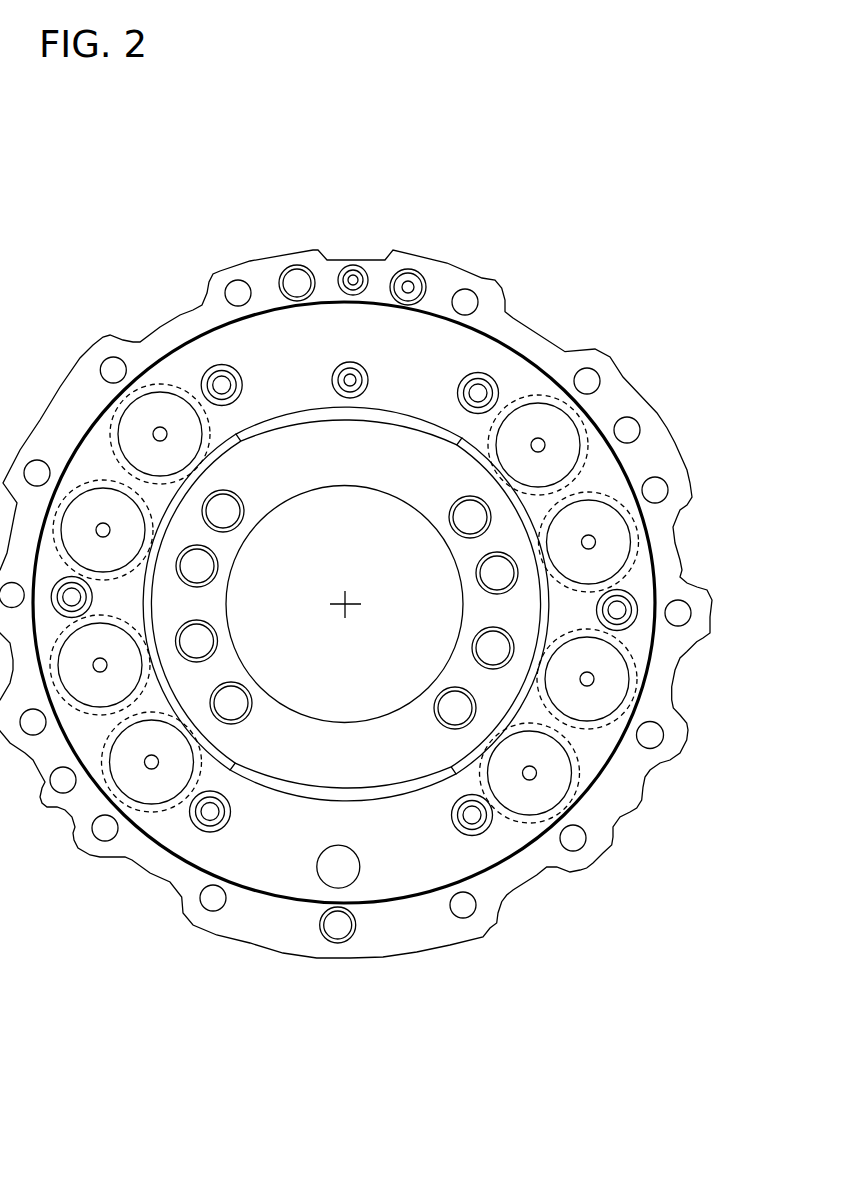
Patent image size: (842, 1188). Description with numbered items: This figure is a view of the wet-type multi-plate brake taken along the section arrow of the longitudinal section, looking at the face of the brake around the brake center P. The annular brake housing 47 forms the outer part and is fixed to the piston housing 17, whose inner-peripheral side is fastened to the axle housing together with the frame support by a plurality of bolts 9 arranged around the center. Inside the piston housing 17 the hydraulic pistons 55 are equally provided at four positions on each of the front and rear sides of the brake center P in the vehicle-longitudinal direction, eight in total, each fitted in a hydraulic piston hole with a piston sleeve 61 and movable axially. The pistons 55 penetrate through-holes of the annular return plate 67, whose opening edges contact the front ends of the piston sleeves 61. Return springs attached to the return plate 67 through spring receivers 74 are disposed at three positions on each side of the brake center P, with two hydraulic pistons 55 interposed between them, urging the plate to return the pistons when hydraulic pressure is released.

The brake housing 47 is at (262, 272).
The piston housing 17 is at (402, 467).
The hydraulic piston 55 is at (542, 401).
The piston sleeve 61 is at (597, 463).
The bolt 9 is at (449, 521).
The brake center P is at (346, 604).
The spring receiver 74 is at (219, 831).
The return plate 67 is at (415, 877).